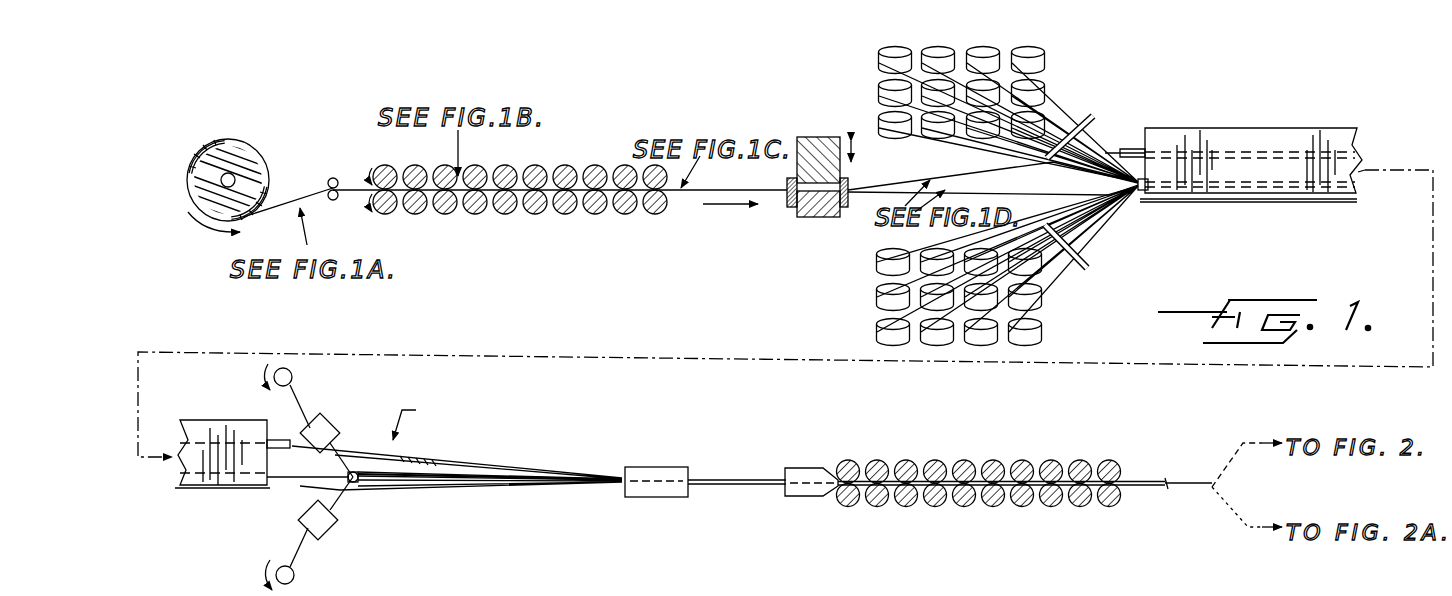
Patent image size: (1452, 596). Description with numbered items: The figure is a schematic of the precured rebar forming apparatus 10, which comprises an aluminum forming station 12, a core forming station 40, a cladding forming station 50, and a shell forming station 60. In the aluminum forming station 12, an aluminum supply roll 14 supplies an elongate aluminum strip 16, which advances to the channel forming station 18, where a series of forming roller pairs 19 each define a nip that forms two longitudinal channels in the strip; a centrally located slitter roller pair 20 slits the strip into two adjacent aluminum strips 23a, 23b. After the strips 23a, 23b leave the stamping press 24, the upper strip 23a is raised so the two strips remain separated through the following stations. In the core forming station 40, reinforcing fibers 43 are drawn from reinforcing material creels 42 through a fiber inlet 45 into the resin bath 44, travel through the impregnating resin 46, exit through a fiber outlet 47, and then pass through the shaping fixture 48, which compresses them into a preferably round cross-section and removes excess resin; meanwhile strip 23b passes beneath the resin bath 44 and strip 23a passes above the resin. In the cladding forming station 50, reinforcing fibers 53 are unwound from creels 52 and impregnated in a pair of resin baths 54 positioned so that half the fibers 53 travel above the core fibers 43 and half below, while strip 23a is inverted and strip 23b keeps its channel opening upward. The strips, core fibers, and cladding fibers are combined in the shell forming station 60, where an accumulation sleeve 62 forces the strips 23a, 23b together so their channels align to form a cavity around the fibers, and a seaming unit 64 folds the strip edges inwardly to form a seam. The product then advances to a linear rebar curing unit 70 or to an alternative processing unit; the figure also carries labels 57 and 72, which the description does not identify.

The precured rebar forming apparatus 10 is at (225, 114).
The aluminum forming station 12 is at (560, 123).
The aluminum supply roll 14 is at (212, 185).
The elongate aluminum strip 16 is at (287, 200).
The channel forming station 18 is at (362, 162).
The forming roller pairs 19 is at (420, 170).
The slitter roller pair 20 is at (495, 168).
The stamping press 24 is at (815, 137).
The aluminum strip 23a is at (880, 190).
The aluminum strip 23b is at (990, 194).
The core forming station 40 is at (1233, 126).
The reinforcing material creels 42 is at (879, 63).
The reinforcing fibers 43 is at (1075, 130).
The resin bath 44 is at (1285, 140).
The fiber inlet 45 is at (1140, 192).
The impregnating resin 46 is at (1355, 178).
The fiber outlet 47 is at (268, 488).
The shaping fixture 48 is at (358, 484).
The cladding forming station 50 is at (502, 436).
The creels 52 is at (290, 368).
The reinforcing fibers 53 is at (300, 390).
The resin baths 54 is at (328, 418).
The lower guide pulley 57 is at (278, 583).
The shell forming station 60 is at (926, 446).
The accumulation sleeve 62 is at (640, 467).
The seaming unit 64 is at (935, 466).
The linear rebar curing unit 70 is at (159, 591).
The downstream station 72 is at (871, 591).